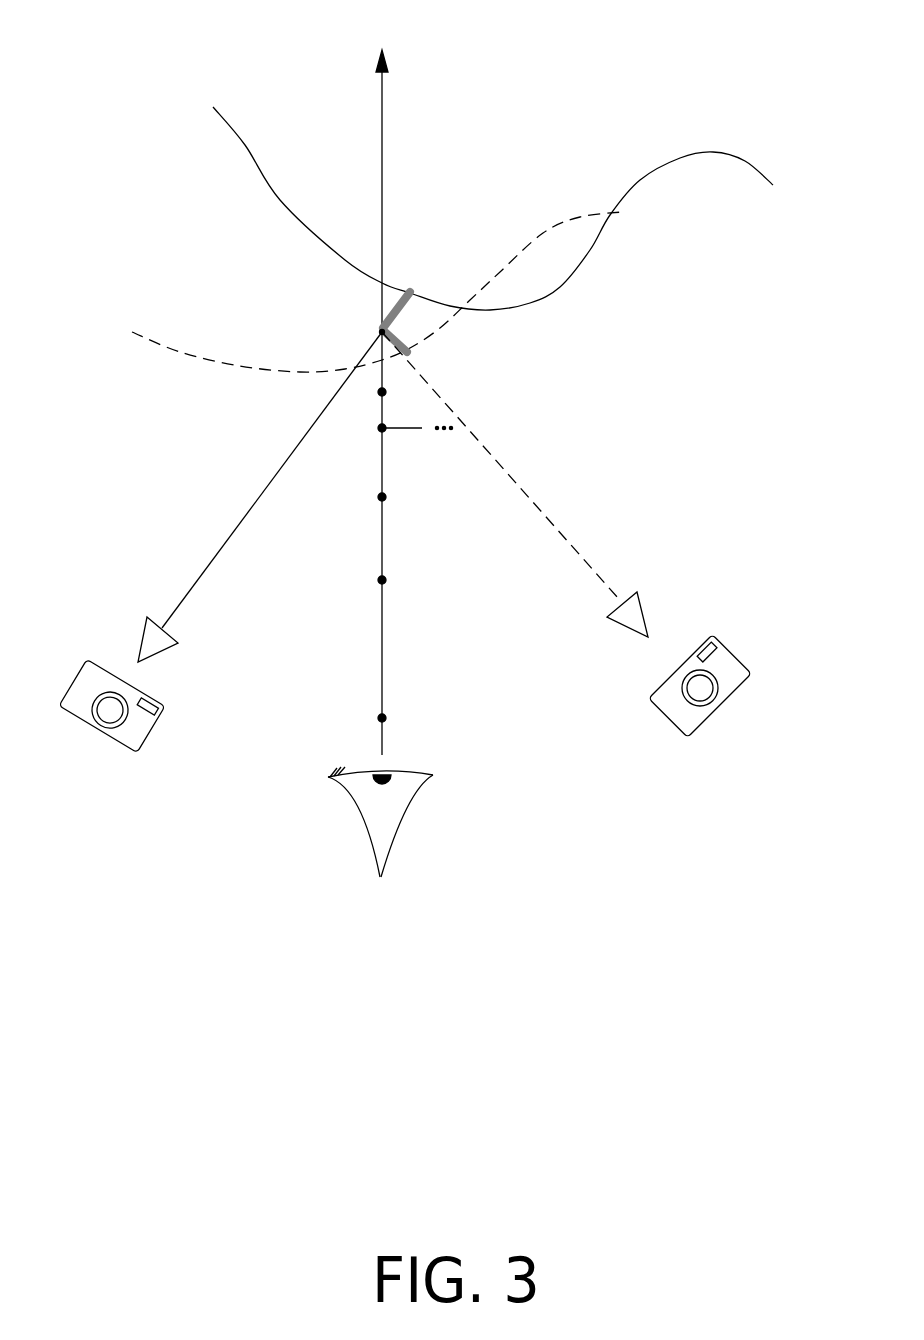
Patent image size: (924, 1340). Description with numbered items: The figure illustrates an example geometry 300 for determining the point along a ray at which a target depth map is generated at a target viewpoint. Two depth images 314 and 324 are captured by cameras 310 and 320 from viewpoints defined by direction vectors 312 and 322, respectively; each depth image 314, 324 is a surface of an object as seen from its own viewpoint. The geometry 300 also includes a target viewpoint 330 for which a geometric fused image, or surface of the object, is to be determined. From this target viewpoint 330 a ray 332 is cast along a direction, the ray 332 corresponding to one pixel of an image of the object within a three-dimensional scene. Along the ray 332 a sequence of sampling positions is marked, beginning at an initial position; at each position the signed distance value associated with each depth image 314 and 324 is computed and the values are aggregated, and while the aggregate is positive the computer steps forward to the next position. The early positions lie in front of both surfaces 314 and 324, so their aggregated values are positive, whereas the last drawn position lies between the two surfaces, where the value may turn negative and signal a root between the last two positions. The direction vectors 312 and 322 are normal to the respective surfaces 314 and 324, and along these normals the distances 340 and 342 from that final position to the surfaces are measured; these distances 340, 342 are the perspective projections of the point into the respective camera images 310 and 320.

The geometry 300 is at (163, 55).
The camera 310 is at (77, 723).
The direction vector 312 is at (223, 543).
The depth image 314 is at (245, 145).
The camera 320 is at (720, 707).
The direction vector 322 is at (539, 512).
The depth image 324 is at (580, 220).
The target viewpoint 330 is at (375, 853).
The ray 332 is at (382, 633).
The distance 340 is at (392, 317).
The distance 342 is at (400, 344).